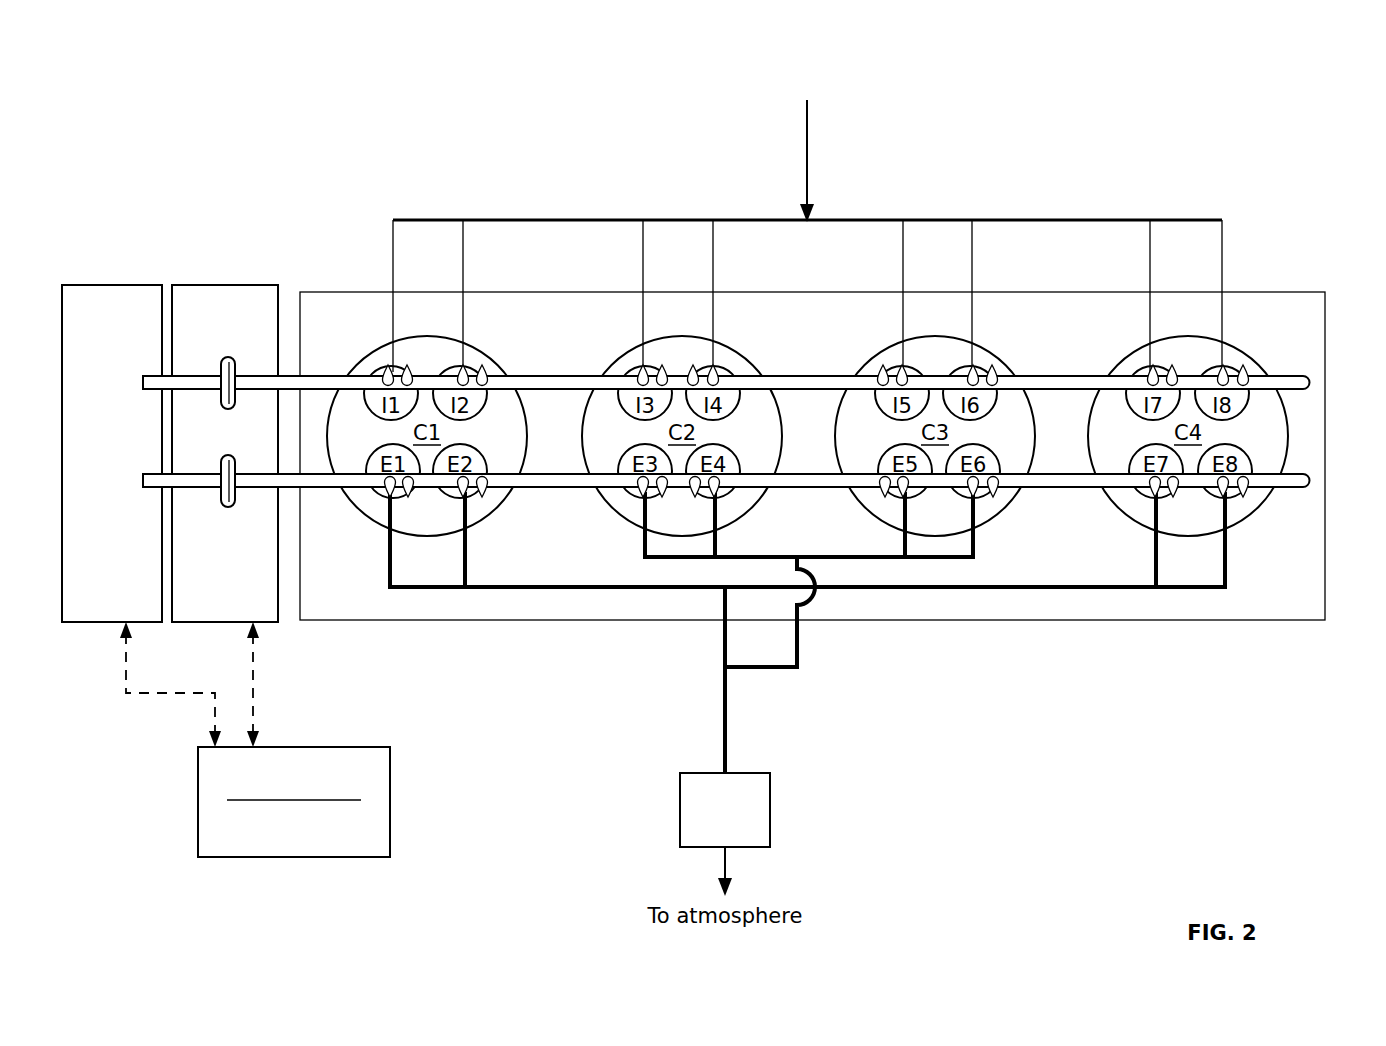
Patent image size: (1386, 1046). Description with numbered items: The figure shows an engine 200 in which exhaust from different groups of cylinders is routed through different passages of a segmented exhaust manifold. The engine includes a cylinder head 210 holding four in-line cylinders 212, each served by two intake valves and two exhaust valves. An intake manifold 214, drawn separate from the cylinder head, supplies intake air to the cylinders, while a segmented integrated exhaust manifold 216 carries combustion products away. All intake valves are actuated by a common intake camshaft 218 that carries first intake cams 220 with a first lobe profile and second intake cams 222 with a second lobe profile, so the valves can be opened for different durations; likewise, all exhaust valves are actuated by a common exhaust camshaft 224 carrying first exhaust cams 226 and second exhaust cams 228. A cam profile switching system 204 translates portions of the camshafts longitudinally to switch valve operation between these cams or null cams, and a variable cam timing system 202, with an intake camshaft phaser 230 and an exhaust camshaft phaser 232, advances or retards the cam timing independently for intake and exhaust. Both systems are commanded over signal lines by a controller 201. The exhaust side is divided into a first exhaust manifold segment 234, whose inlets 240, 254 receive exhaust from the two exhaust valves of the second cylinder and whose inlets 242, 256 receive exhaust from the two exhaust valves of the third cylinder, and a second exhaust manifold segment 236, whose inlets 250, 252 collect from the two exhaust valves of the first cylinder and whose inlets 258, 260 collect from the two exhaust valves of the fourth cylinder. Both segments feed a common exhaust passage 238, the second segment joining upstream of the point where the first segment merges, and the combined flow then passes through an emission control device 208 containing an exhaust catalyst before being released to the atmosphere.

The engine 200 is at (1316, 96).
The controller 201 is at (277, 831).
The variable cam timing (VCT) system 202 is at (142, 285).
The cam profile switching (CPS) system 204 is at (252, 285).
The emission control device 208 is at (708, 827).
The cylinder head 210 is at (1252, 292).
The cylinders 212 is at (1238, 346).
The intake manifold 214 is at (1025, 220).
The segmented integrated exhaust manifold 216 is at (1247, 577).
The intake camshaft 218 is at (290, 376).
The first intake cams 220 is at (388, 364).
The second intake cams 222 is at (408, 364).
The exhaust camshaft 224 is at (290, 474).
The first exhaust cams 226 is at (386, 497).
The second exhaust cams 228 is at (410, 495).
The intake camshaft phaser 230 is at (224, 358).
The exhaust camshaft phaser 232 is at (224, 456).
The first exhaust manifold segment 234 is at (799, 636).
The second exhaust manifold segment 236 is at (1022, 587).
The exhaust passage 238 is at (724, 710).
The inlet 240 is at (720, 498).
The inlet 242 is at (892, 498).
The inlet 250 is at (395, 497).
The inlet 252 is at (483, 498).
The inlet 254 is at (638, 498).
The inlet 256 is at (986, 498).
The inlet 258 is at (1147, 498).
The inlet 260 is at (1242, 498).